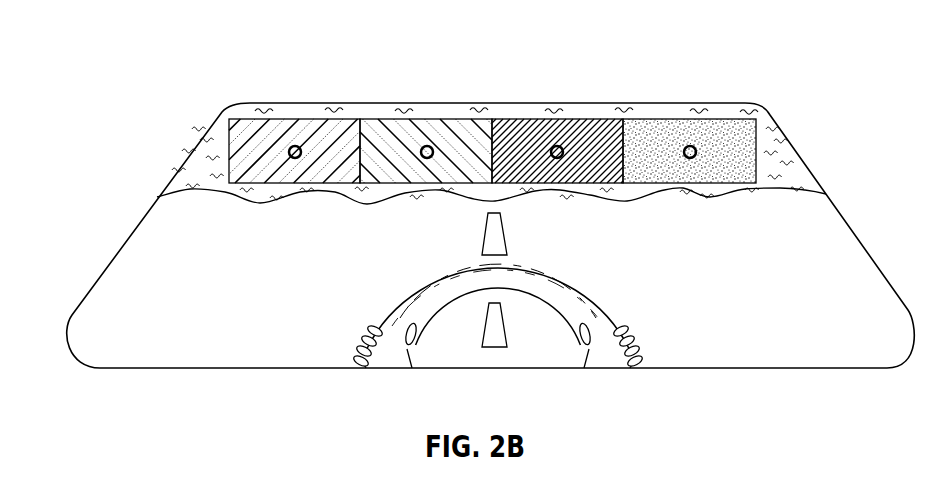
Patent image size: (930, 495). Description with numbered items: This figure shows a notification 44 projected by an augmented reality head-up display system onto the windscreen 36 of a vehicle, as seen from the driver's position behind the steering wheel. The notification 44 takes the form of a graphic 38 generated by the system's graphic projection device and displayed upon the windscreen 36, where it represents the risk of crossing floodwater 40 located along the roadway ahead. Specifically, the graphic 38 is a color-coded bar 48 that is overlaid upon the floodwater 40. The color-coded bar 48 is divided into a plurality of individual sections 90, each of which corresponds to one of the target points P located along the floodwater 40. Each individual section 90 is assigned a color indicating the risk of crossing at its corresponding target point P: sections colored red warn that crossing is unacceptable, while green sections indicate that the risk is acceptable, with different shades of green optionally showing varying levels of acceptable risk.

The windscreen 36 is at (786, 291).
The graphic 38 is at (229, 149).
The floodwater 40 is at (782, 162).
The notification 44 is at (243, 105).
The color-coded bar 48 is at (725, 119).
The individual sections 90 is at (270, 198).
The target points P is at (294, 146).